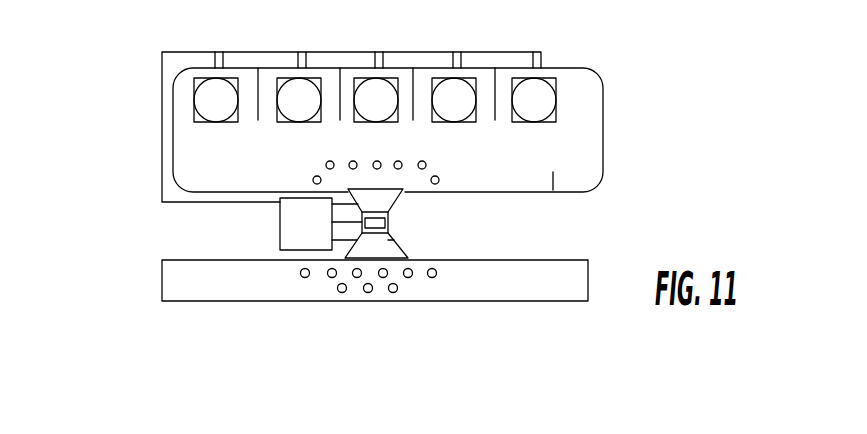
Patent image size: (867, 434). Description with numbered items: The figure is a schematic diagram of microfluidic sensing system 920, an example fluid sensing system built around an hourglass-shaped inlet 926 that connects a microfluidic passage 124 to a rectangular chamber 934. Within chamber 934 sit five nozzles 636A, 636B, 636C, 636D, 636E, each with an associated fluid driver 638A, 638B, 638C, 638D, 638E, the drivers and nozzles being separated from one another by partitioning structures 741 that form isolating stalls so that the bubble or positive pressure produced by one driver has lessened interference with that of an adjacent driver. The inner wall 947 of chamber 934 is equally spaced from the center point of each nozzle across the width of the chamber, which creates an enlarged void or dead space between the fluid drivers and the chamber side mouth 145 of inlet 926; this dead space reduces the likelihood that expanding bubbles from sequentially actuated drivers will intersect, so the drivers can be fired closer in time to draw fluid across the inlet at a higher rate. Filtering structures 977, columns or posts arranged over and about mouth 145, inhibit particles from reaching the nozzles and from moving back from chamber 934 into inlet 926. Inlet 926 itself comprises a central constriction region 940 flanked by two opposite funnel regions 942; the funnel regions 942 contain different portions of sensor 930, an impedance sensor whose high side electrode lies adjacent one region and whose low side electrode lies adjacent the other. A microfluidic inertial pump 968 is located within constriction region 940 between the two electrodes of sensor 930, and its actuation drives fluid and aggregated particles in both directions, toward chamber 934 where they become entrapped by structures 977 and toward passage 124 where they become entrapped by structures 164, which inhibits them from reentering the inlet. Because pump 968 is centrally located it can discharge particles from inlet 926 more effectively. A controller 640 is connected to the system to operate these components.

The microfluidic sensing system 920 is at (124, 128).
The chamber 934 is at (605, 167).
The nozzle 636A is at (219, 70).
The nozzle 636B is at (302, 70).
The nozzle 636C is at (379, 70).
The nozzle 636D is at (457, 70).
The nozzle 636E is at (537, 70).
The fluid driver 638A is at (233, 122).
The fluid driver 638B is at (315, 122).
The fluid driver 638C is at (388, 122).
The fluid driver 638D is at (466, 122).
The fluid driver 638E is at (550, 118).
The partitioning structure 741 is at (258, 108).
The inner wall 947 is at (553, 190).
The chamber side mouth 145 is at (348, 190).
The filtering structures 977 is at (426, 165).
The controller 640 is at (280, 218).
The funnel region 942 is at (395, 203).
The sensor 930 is at (392, 246).
The microfluidic inertial pump 968 is at (375, 237).
The inlet 926 is at (410, 244).
The central constriction region 940 is at (392, 240).
The microfluidic passage 124 is at (561, 254).
The structures 164 is at (398, 288).